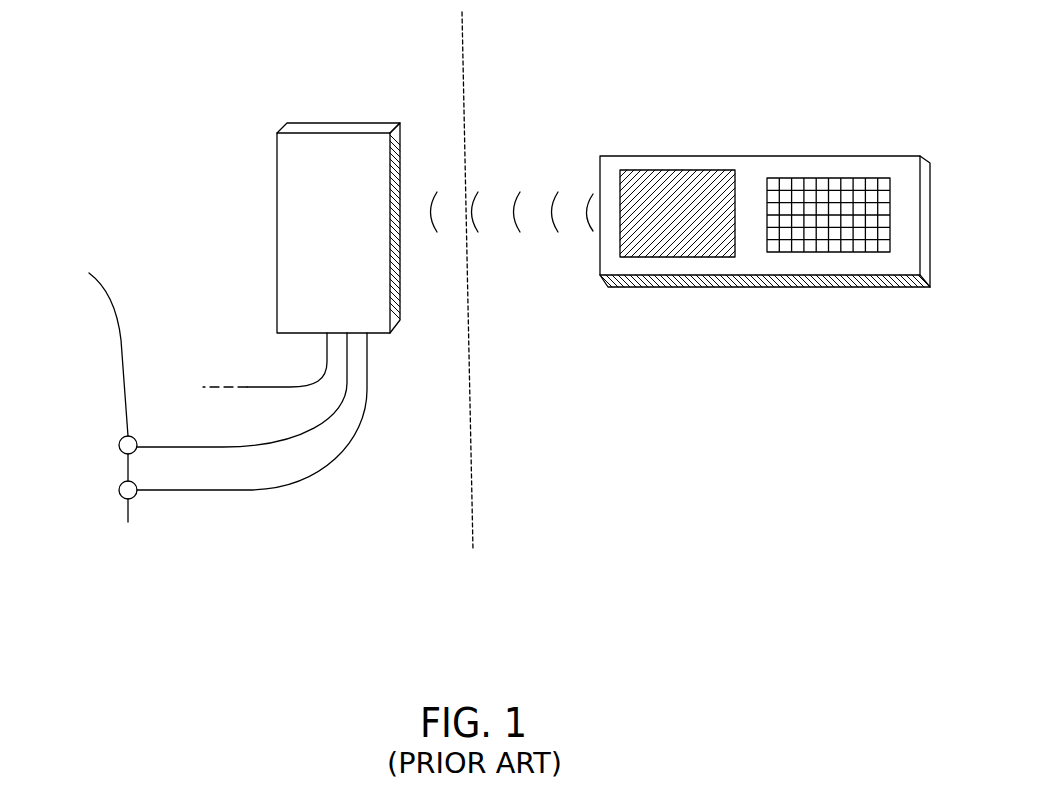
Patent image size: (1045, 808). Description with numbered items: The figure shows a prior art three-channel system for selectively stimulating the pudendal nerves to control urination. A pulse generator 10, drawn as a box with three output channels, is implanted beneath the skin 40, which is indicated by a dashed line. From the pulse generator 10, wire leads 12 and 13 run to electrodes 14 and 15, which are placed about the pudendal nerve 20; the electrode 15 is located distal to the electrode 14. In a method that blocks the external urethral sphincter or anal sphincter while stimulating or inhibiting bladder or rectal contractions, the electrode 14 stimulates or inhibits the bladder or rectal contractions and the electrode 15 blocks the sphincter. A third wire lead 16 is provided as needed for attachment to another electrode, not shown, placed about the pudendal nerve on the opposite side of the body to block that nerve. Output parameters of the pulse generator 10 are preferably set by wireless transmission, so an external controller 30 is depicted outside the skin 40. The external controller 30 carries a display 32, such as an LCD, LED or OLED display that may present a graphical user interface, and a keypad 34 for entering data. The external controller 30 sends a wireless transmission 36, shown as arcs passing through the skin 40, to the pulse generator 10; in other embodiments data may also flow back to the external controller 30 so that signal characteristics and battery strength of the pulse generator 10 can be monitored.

The pulse generator 10 is at (297, 140).
The wire lead 12 is at (328, 415).
The wire lead 13 is at (340, 457).
The electrode 14 is at (119, 445).
The electrode 15 is at (119, 489).
The wire lead 16 is at (325, 368).
The pudendal nerve 20 is at (131, 508).
The external controller 30 is at (752, 257).
The display 32 is at (633, 257).
The keypad 34 is at (843, 243).
The wireless transmission 36 is at (556, 232).
The skin 40 is at (468, 43).